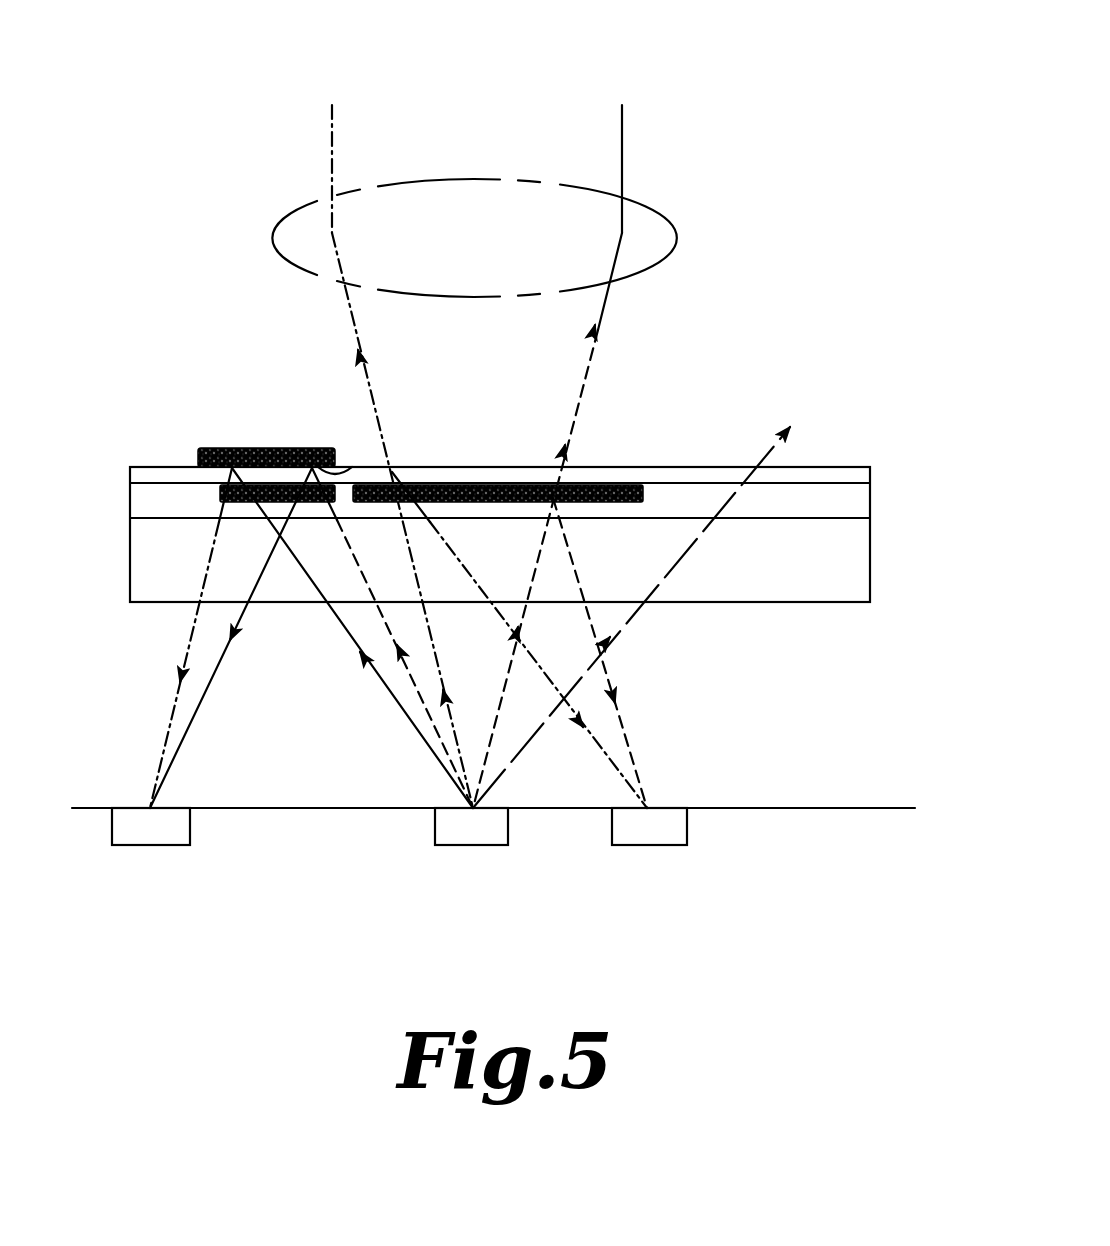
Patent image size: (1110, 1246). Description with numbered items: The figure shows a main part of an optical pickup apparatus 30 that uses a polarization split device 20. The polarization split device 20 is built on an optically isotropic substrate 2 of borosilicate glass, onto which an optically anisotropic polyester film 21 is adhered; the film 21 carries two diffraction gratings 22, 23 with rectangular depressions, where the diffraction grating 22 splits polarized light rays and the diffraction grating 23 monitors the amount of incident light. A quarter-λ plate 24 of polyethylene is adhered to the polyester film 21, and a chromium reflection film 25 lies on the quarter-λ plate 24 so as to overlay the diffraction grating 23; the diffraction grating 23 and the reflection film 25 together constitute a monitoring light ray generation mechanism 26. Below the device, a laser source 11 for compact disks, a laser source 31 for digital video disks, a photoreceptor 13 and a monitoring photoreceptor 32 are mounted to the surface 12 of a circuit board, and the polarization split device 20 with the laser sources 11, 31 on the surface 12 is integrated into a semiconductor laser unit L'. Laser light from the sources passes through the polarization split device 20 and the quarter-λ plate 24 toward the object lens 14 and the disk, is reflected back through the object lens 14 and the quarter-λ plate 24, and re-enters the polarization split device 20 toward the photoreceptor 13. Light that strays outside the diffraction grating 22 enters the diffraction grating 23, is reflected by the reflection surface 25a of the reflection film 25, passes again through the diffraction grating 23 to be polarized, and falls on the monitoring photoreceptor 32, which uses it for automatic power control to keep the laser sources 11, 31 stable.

The object lens 14 is at (477, 178).
The optical pickup apparatus 30 is at (822, 243).
The polarization split device 20 is at (538, 554).
The optically isotropic substrate 2 is at (872, 570).
The optically anisotropic film 21 is at (872, 500).
The monitoring light ray generation mechanism 26 is at (388, 401).
The reflection film 25 is at (314, 412).
The reflection surface 25a is at (350, 468).
The diffraction grating 23 is at (220, 489).
The diffraction grating 22 is at (605, 490).
The quarter-λ plate 24 is at (718, 467).
The surface of a circuit board 12 is at (113, 808).
The monitoring photoreceptor 32 is at (153, 846).
The laser source 11 is at (519, 875).
The laser source 31 is at (470, 846).
The photoreceptor 13 is at (648, 846).
The semiconductor laser unit L' is at (791, 726).